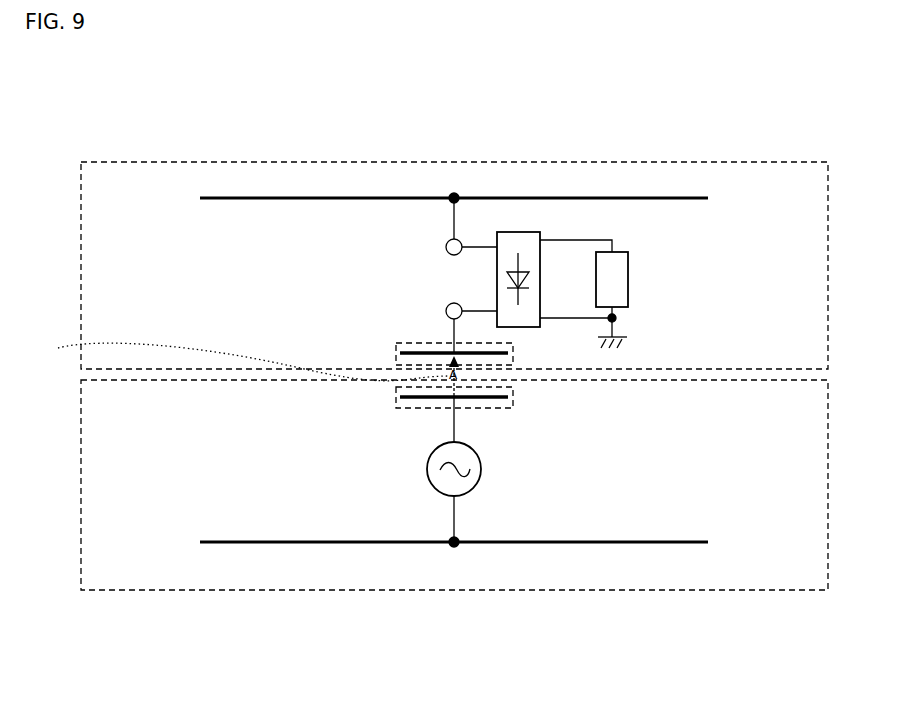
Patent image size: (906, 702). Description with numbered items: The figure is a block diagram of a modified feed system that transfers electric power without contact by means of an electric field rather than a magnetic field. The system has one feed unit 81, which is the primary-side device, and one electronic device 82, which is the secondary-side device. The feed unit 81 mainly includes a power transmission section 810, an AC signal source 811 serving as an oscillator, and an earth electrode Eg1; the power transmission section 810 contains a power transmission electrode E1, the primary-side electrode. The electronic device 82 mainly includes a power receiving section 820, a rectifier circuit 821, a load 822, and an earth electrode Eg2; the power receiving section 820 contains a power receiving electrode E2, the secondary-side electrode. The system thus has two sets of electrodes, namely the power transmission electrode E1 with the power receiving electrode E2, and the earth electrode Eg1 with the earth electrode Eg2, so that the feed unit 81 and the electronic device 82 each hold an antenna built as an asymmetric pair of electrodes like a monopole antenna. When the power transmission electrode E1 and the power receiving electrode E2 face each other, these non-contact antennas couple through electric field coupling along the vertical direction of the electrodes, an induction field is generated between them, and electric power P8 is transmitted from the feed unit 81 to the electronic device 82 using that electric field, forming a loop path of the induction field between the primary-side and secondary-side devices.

The electronic device 82 is at (452, 160).
The feed unit 81 is at (457, 590).
The earth electrode Eg2 is at (615, 200).
The earth electrode Eg1 is at (615, 541).
The rectifier circuit 821 is at (497, 284).
The load 822 is at (629, 280).
The power receiving section 820 is at (513, 353).
The power transmission section 810 is at (513, 396).
The power receiving electrode E2 is at (406, 345).
The power transmission electrode E1 is at (406, 405).
The AC signal source 811 is at (482, 469).
The electric power P8 is at (240, 357).